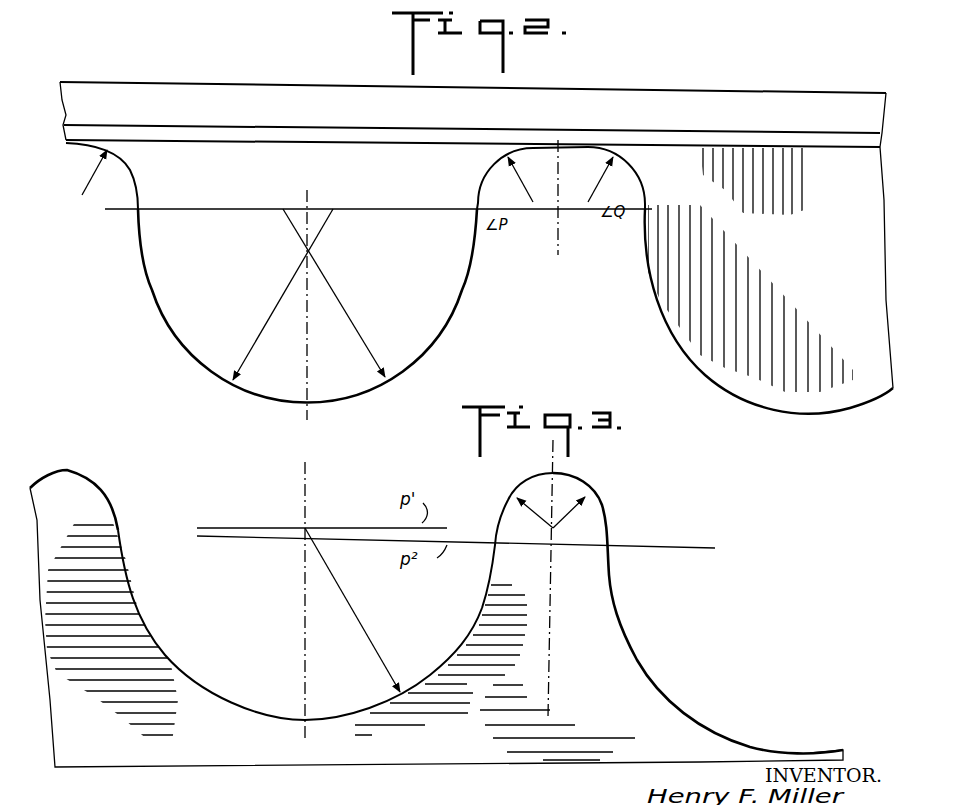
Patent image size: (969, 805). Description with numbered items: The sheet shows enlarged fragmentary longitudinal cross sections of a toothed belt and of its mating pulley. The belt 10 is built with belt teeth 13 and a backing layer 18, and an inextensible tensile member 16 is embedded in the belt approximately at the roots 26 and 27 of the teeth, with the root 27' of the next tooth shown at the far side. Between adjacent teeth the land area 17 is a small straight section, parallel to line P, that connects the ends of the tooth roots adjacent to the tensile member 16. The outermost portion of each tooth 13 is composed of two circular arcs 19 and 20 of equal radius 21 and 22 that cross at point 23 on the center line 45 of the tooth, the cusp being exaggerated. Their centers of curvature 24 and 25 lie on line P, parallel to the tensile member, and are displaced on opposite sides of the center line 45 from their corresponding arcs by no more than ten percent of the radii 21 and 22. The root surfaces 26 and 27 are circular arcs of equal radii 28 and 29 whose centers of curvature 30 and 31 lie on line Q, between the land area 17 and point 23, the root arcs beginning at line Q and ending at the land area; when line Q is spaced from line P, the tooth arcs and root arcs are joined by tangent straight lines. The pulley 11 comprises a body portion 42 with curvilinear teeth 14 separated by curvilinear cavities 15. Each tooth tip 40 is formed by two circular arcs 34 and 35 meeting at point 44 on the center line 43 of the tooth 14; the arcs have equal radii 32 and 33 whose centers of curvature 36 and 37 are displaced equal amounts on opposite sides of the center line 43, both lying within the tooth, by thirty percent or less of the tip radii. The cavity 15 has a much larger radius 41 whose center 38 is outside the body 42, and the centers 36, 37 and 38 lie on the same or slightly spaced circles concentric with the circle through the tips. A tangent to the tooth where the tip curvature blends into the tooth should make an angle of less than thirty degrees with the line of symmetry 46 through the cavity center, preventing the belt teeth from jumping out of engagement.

In FIG. 2, the belt 10 is at (777, 65).
In FIG. 2, the tensile member 16 is at (775, 133).
In FIG. 2, the backing layer 18 is at (830, 110).
In FIG. 2, the land area 17 is at (543, 148).
In FIG. 2, the tooth root 27 is at (127, 176).
In FIG. 2, the tooth root 27' is at (656, 164).
In FIG. 2, the belt tooth 13 is at (428, 308).
In FIG. 2, the circular arc 19 is at (203, 360).
In FIG. 2, the circular arc 20 is at (400, 367).
In FIG. 2, the radius 21 is at (272, 310).
In FIG. 2, the radius 22 is at (345, 313).
In FIG. 2, the crossing point 23 is at (300, 404).
In FIG. 2, the center of curvature 24 is at (283, 209).
In FIG. 2, the center of curvature 25 is at (333, 209).
In FIG. 2, the center line 45 is at (308, 333).
In FIG. 2, the tooth root 26 is at (490, 163).
In FIG. 2, the root radius 28 is at (517, 178).
In FIG. 2, the root radius 29 is at (597, 183).
In FIG. 2, the center of curvature 30 is at (533, 204).
In FIG. 2, the center of curvature 31 is at (588, 204).
In FIG. 3, the pulley 11 is at (106, 487).
In FIG. 3, the pulley tooth 14 is at (610, 640).
In FIG. 3, the cavity 15 is at (208, 690).
In FIG. 3, the circular arc 34 is at (530, 475).
In FIG. 3, the circular arc 35 is at (585, 490).
In FIG. 3, the tip radius 32 is at (520, 505).
In FIG. 3, the tip radius 33 is at (562, 522).
In FIG. 3, the center of curvature 36 is at (547, 537).
In FIG. 3, the center of curvature 37 is at (557, 535).
In FIG. 3, the center 38 is at (305, 528).
In FIG. 3, the tooth tip 40 is at (583, 519).
In FIG. 3, the cavity radius 41 is at (358, 622).
In FIG. 3, the body portion 42 is at (205, 742).
In FIG. 3, the center line 43 is at (547, 668).
In FIG. 3, the meeting point 44 is at (556, 474).
In FIG. 3, the line of symmetry 46 is at (308, 479).